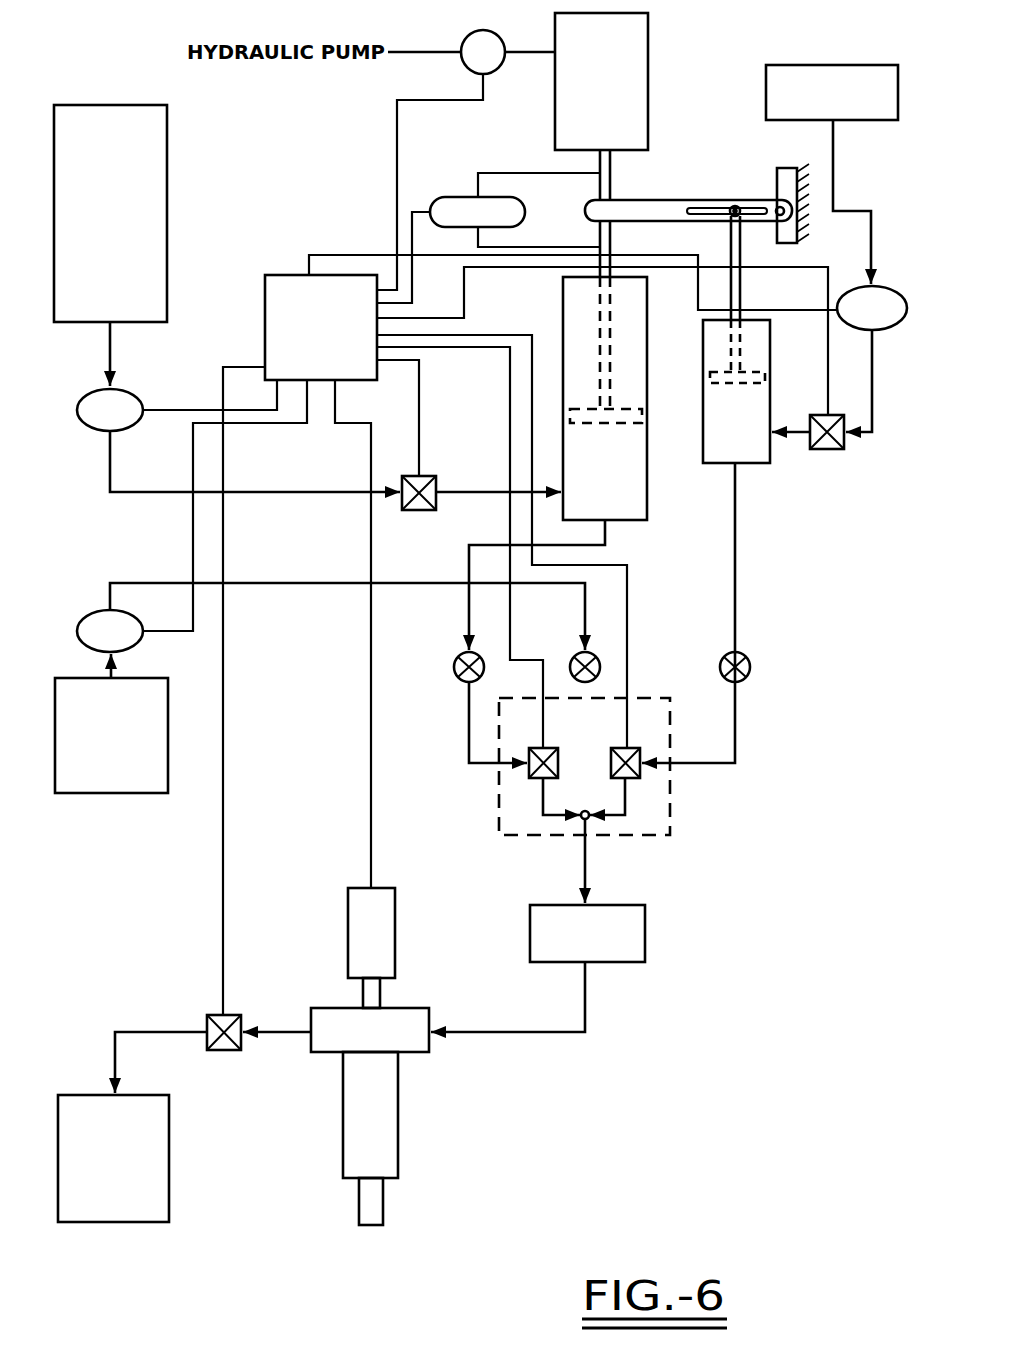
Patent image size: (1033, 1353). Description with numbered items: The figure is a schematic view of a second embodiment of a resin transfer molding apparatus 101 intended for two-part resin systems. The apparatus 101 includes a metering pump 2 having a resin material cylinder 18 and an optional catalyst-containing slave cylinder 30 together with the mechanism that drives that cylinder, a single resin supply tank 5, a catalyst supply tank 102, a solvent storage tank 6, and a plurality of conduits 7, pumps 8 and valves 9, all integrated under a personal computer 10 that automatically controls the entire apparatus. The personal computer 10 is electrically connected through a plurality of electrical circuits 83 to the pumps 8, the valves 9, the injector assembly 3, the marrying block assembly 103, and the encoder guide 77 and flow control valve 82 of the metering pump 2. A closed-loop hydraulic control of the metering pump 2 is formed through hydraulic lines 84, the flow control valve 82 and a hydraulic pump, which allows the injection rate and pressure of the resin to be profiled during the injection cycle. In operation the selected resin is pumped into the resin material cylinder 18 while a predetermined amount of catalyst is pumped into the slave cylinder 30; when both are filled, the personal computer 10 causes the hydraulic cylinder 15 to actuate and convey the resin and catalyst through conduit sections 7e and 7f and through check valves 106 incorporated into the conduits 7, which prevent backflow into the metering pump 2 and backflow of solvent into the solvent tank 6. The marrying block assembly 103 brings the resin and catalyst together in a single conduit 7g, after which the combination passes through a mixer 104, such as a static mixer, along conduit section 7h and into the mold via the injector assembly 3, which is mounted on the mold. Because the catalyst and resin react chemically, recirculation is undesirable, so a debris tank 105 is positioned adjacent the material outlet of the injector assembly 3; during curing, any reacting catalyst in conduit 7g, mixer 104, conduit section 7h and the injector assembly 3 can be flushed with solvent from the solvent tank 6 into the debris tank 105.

The metering pump 2 is at (712, 190).
The injector assembly 3 is at (396, 945).
The resin supply tank 5 is at (167, 196).
The solvent storage tank 6 is at (115, 793).
The conduits 7 is at (110, 352).
The conduit section 7e is at (605, 540).
The conduit section 7f is at (735, 513).
The conduit 7g is at (585, 872).
The conduit section 7h is at (560, 1040).
The pumps 8 is at (84, 396).
The valves 9 is at (419, 512).
The personal computer 10 is at (265, 310).
The hydraulic cylinder 15 is at (648, 66).
The resin material cylinder 18 is at (563, 314).
The slave cylinder 30 is at (703, 368).
The encoder guide 77 is at (450, 197).
The flow control valve 82 is at (468, 68).
The electrical circuits 83 is at (397, 134).
The hydraulic lines 84 is at (442, 50).
The apparatus 101 is at (628, 1062).
The catalyst supply tank 102 is at (833, 65).
The marrying block assembly 103 is at (670, 804).
The mixer 104 is at (645, 940).
The debris tank 105 is at (169, 1160).
The check valves 106 is at (456, 658).